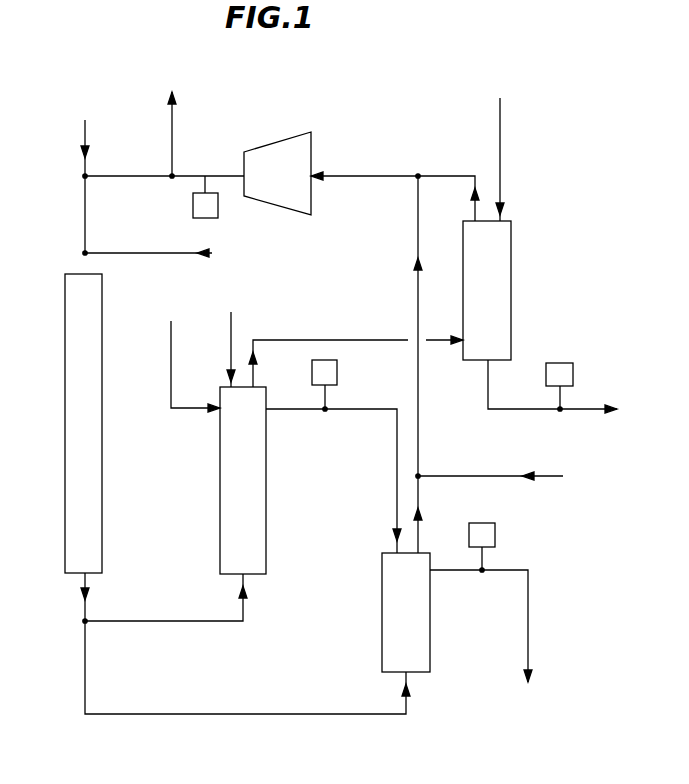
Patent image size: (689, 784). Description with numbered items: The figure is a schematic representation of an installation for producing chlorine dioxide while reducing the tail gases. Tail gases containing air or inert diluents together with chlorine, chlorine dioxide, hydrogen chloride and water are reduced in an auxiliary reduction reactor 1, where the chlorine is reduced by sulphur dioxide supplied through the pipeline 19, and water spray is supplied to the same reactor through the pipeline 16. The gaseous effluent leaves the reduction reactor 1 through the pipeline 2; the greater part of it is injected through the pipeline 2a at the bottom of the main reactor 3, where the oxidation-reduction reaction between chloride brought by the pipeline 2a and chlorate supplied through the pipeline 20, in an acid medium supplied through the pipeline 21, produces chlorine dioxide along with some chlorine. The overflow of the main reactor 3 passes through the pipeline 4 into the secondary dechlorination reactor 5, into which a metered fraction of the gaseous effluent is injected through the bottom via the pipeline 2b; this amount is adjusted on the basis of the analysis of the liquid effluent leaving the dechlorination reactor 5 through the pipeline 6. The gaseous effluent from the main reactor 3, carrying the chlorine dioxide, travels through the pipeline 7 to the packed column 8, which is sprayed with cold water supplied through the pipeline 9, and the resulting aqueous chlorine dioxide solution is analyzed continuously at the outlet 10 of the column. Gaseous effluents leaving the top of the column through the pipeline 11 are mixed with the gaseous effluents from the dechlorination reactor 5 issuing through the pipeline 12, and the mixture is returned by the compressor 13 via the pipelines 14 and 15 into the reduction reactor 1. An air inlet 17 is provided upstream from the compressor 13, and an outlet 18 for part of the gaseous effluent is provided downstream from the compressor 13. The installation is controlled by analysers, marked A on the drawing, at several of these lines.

The auxiliary reduction reactor 1 is at (83, 423).
The pipeline 2 is at (85, 611).
The pipeline 2a is at (203, 622).
The pipeline 2b is at (195, 716).
The main reactor 3 is at (243, 480).
The pipeline 4 is at (293, 410).
The secondary dechlorination reactor 5 is at (406, 612).
The pipeline 6 is at (528, 633).
The pipeline 7 is at (310, 340).
The packed column 8 is at (487, 290).
The pipeline 9 is at (500, 178).
The outlet 10 is at (517, 411).
The pipeline 11 is at (455, 160).
The pipeline 12 is at (422, 433).
The compressor 13 is at (331, 173).
The pipeline 14 is at (186, 175).
The pipeline 15 is at (85, 206).
The pipeline 16 is at (85, 130).
The air inlet 17 is at (478, 477).
The outlet 18 is at (172, 130).
The pipeline 19 is at (172, 252).
The pipeline 20 is at (231, 334).
The pipeline 21 is at (171, 334).